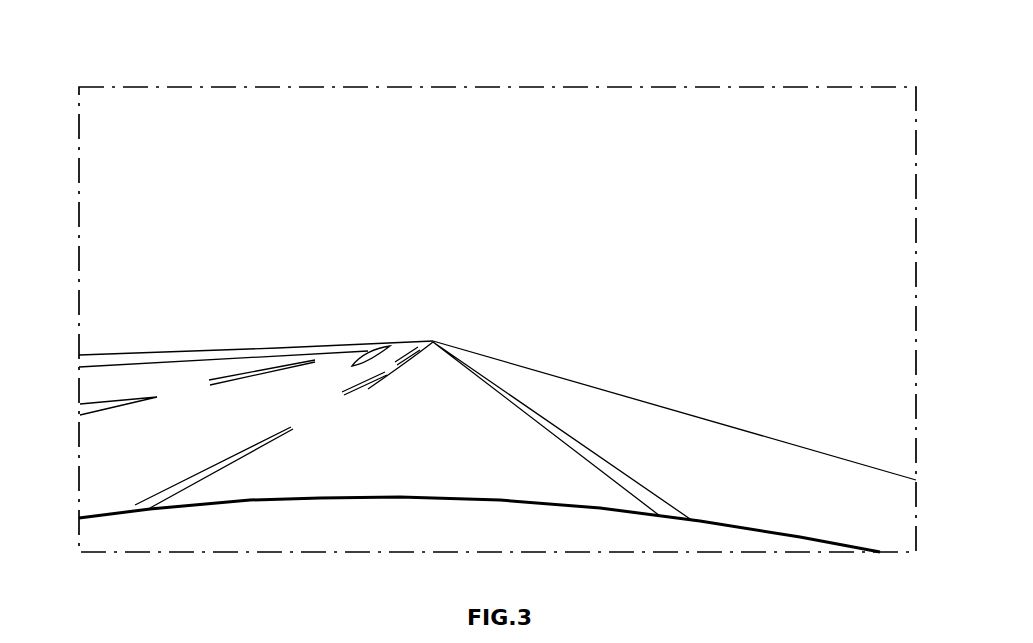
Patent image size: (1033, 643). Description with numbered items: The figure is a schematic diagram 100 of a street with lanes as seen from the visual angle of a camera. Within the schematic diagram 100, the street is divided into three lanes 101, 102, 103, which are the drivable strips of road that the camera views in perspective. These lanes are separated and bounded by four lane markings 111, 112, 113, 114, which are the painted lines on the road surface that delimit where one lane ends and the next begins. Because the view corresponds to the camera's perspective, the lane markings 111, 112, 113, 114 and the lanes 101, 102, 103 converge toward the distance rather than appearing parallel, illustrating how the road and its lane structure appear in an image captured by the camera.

The schematic diagram 100 is at (577, 182).
The lane 101 is at (430, 448).
The lane 102 is at (157, 447).
The lane 103 is at (103, 378).
The lane marking 111 is at (535, 412).
The lane marking 112 is at (433, 341).
The lane marking 113 is at (378, 343).
The lane marking 114 is at (277, 352).